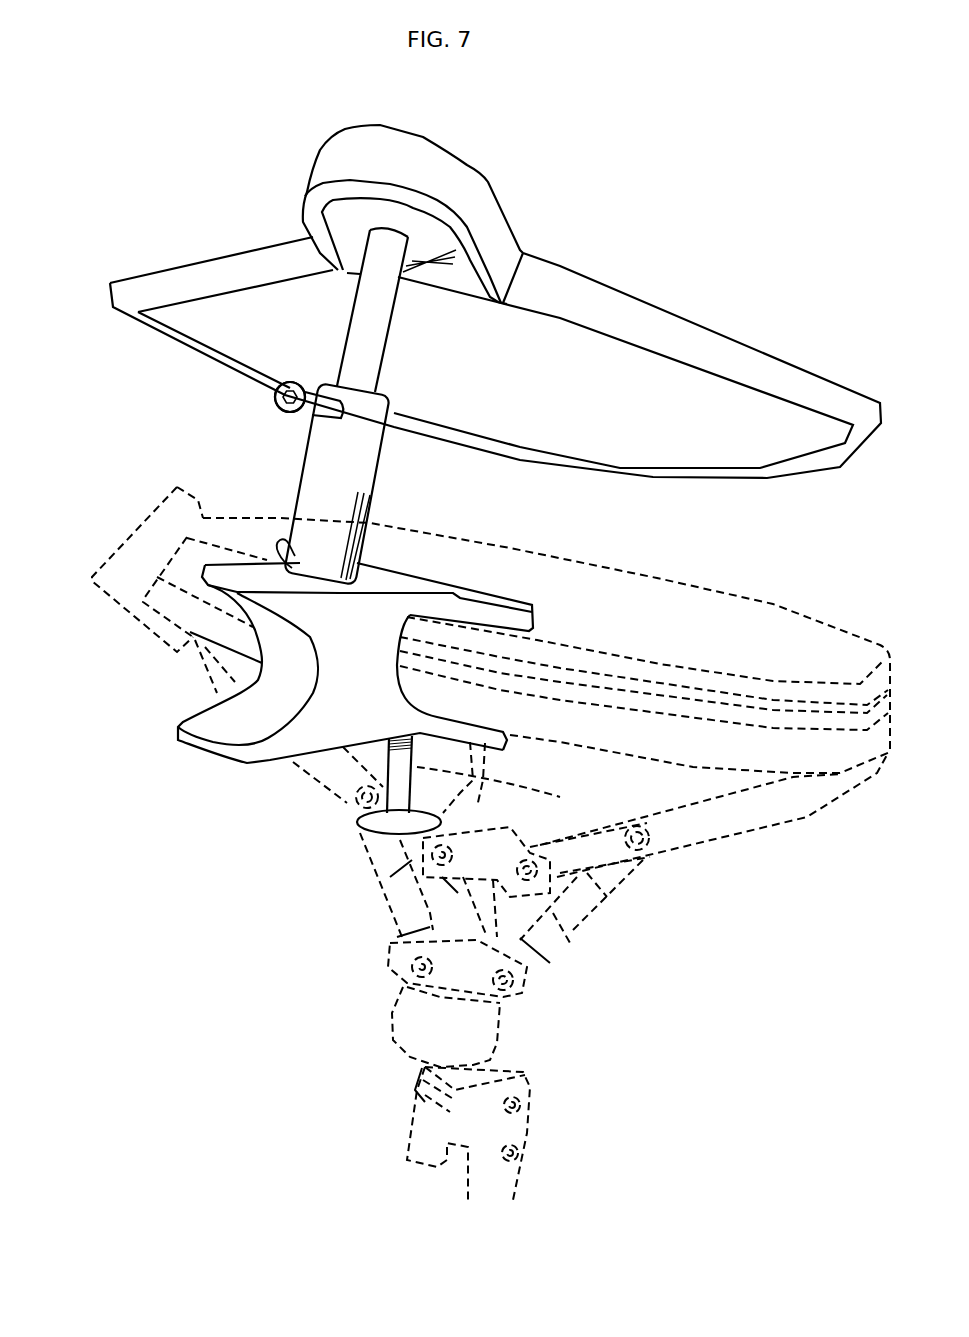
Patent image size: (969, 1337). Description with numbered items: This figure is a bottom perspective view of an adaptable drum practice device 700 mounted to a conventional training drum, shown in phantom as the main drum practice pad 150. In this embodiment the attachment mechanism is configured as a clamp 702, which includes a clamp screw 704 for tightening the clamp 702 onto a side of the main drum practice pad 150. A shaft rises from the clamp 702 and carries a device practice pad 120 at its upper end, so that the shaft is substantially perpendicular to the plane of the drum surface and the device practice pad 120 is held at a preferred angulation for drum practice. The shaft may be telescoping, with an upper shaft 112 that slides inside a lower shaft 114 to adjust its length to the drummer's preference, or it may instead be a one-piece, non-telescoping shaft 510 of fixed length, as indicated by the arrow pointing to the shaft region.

The adaptable drum practice device 700 is at (151, 187).
The device practice pad 120 is at (713, 327).
The upper shaft 112 is at (393, 358).
The lower shaft 114 is at (378, 497).
The shaft 510 is at (265, 448).
The main drum practice pad 150 is at (777, 597).
The clamp 702 is at (215, 763).
The clamp screw 704 is at (423, 770).